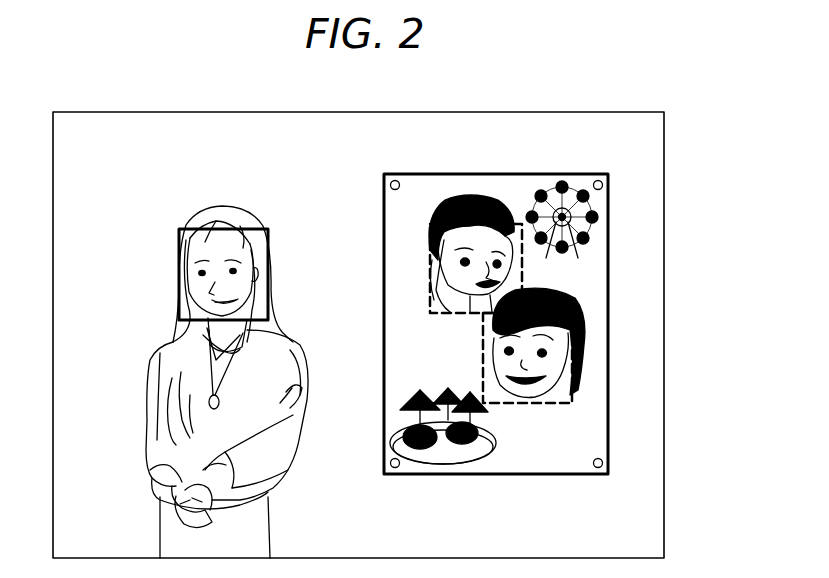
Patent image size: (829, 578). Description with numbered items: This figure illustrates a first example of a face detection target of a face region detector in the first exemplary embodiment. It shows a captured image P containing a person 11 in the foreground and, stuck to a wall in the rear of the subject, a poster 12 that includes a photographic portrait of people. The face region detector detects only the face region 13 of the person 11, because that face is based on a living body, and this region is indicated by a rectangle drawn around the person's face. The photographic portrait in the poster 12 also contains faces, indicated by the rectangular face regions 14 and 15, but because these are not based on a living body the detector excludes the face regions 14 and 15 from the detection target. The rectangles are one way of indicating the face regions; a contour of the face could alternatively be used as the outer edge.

The captured image P is at (664, 378).
The person 11 is at (143, 335).
The poster 12 is at (555, 174).
The face region 13 is at (206, 229).
The face region 14 is at (427, 229).
The face region 15 is at (552, 404).